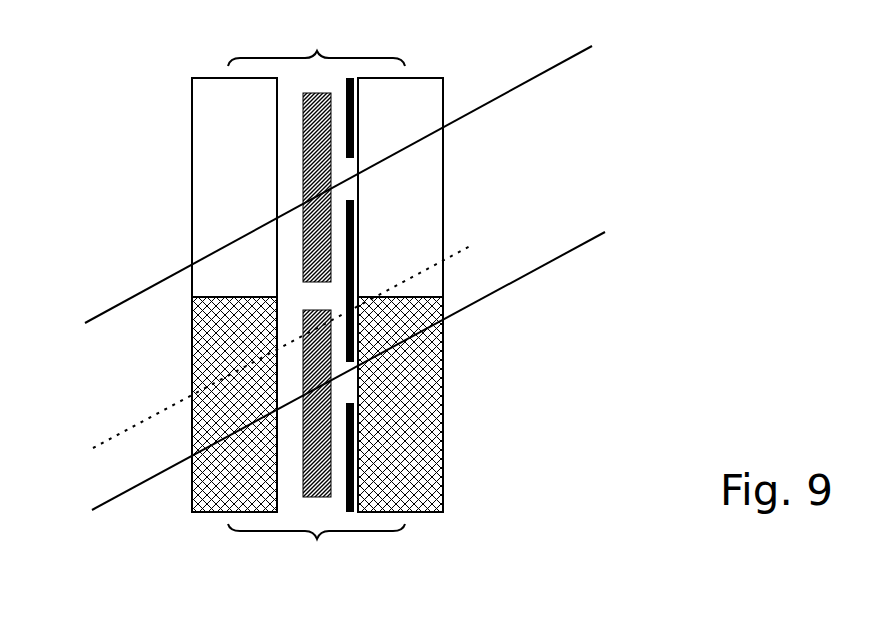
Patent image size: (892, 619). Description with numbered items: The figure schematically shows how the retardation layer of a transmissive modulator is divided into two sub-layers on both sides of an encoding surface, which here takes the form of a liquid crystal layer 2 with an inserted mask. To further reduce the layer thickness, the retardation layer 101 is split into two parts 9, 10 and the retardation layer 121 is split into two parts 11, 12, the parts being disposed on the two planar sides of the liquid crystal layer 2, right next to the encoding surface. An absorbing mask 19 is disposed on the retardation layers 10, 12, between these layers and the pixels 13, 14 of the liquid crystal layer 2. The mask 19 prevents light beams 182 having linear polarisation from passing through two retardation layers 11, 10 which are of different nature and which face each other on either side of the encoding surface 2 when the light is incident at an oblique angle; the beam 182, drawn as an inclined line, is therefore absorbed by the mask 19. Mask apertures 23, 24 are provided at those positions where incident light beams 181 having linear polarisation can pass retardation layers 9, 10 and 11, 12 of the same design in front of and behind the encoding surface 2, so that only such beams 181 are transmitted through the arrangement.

The liquid crystal layer 2 is at (239, 295).
The retardation layer part 9 is at (192, 160).
The retardation layer part 10 is at (443, 158).
The retardation layer part 11 is at (205, 497).
The retardation layer part 12 is at (440, 497).
The pixel 13 is at (303, 228).
The pixel 14 is at (303, 367).
The absorbing mask 19 is at (356, 420).
The mask aperture 23 is at (352, 190).
The mask aperture 24 is at (352, 380).
The retardation layer 101 is at (316, 46).
The retardation layer 121 is at (316, 547).
The light beam 181 is at (109, 304).
The light beam 182 is at (119, 431).